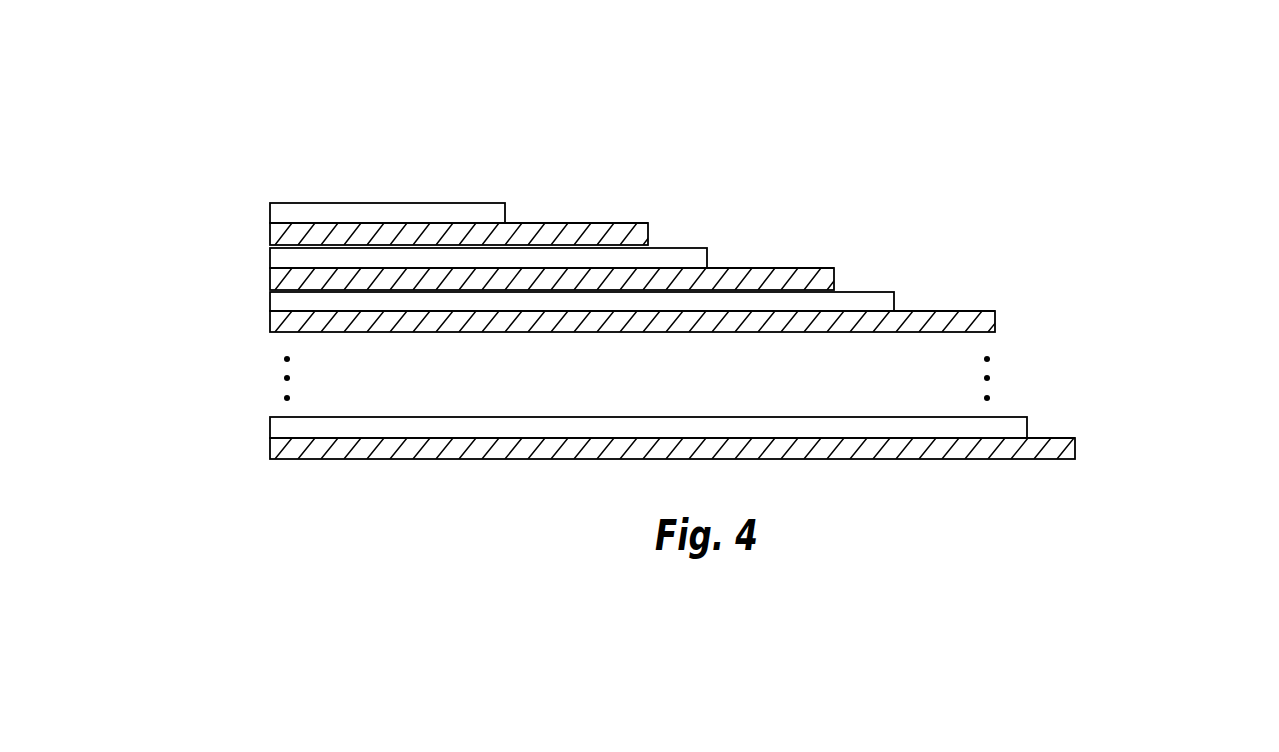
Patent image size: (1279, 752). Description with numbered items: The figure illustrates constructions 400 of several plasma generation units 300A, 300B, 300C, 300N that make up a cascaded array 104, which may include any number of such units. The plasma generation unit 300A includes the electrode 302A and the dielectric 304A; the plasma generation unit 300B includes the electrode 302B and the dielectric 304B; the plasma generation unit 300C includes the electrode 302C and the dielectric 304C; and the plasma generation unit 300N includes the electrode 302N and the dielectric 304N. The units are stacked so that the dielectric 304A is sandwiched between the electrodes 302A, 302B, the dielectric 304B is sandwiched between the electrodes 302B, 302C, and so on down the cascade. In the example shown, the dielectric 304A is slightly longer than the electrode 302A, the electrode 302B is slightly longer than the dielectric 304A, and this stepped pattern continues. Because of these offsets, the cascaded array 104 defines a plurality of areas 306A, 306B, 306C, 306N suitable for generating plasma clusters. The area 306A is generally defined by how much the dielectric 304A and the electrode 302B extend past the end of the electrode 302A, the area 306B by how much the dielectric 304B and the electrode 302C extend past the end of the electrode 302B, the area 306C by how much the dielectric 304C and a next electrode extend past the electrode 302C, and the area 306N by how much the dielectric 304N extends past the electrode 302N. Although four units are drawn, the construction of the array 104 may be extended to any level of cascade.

The constructions 400 is at (992, 93).
The cascaded array 104 is at (182, 188).
The plasma generation unit 300A is at (260, 203).
The plasma generation unit 300B is at (260, 248).
The plasma generation unit 300C is at (260, 292).
The plasma generation unit 300N is at (260, 417).
The electrode 302A is at (505, 203).
The dielectric 304A is at (648, 224).
The area 306A is at (575, 209).
The electrode 302B is at (707, 247).
The dielectric 304B is at (834, 268).
The area 306B is at (775, 257).
The electrode 302C is at (894, 292).
The dielectric 304C is at (995, 310).
The area 306C is at (945, 293).
The electrode 302N is at (1027, 417).
The dielectric 304N is at (1075, 438).
The area 306N is at (1053, 427).